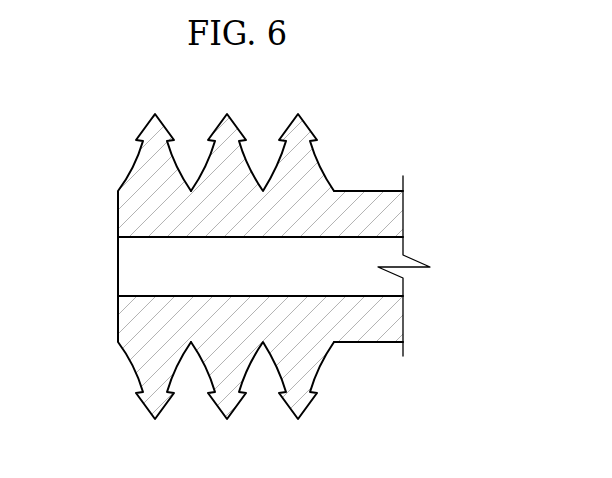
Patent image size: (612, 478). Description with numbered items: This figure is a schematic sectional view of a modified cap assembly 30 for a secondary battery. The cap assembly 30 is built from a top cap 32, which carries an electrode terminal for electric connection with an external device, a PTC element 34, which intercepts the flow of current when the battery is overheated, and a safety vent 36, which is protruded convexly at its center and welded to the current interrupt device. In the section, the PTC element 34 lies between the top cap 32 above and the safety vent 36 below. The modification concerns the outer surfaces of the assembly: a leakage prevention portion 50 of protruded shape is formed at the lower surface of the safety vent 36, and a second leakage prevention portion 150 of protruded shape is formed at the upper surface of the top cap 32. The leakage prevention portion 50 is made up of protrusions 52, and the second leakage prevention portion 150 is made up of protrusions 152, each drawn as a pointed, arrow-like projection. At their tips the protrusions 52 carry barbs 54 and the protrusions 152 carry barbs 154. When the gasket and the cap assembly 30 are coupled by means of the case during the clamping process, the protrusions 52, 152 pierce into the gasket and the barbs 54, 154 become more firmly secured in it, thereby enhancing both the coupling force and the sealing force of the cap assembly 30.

The cap assembly 30 is at (90, 427).
The top cap 32 is at (370, 191).
The PTC element 34 is at (386, 250).
The safety vent 36 is at (370, 343).
The leakage prevention portion 50 is at (118, 373).
The protrusion 52 is at (172, 370).
The barb 54 is at (241, 396).
The second leakage prevention portion 150 is at (118, 157).
The protrusion 152 is at (118, 186).
The barb 154 is at (212, 139).